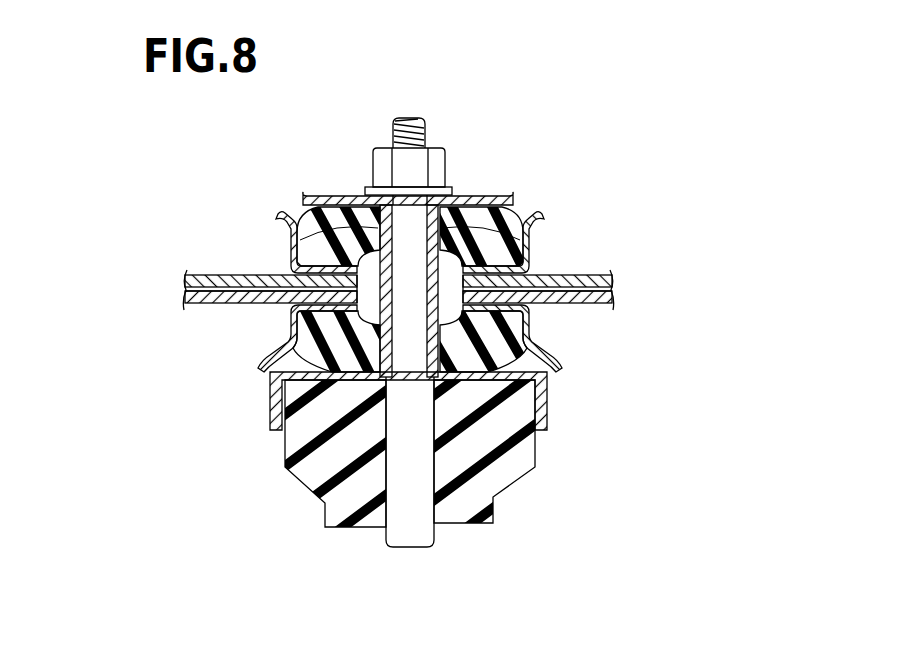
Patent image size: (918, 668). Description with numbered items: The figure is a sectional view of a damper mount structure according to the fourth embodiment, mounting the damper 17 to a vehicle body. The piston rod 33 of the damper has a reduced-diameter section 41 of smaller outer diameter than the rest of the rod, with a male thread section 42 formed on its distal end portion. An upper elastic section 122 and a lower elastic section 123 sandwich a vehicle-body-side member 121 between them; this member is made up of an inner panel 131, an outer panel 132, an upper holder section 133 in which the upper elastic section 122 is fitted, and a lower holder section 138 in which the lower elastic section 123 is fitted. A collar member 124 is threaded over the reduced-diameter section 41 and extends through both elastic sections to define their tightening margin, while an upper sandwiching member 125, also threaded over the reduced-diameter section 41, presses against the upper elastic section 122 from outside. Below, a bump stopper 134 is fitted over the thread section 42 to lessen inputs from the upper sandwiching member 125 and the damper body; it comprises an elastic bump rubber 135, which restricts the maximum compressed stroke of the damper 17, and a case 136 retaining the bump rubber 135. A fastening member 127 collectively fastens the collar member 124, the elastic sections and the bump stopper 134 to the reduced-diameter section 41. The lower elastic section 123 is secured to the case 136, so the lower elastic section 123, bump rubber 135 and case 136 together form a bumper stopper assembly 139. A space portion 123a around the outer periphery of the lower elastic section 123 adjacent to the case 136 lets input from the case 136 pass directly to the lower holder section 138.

The damper 17 is at (465, 542).
The piston rod 33 is at (437, 468).
The reduced-diameter section 41 is at (398, 197).
The male thread section 42 is at (400, 125).
The vehicle-body-side member 121 is at (498, 301).
The upper elastic section 122 is at (517, 202).
The lower elastic section 123 is at (387, 349).
The space portion 123a is at (548, 346).
The collar member 124 is at (292, 247).
The upper sandwiching member 125 is at (508, 215).
The fastening member 127 is at (433, 160).
The inner panel 131 is at (613, 298).
The outer panel 132 is at (613, 278).
The upper holder section 133 is at (526, 238).
The bump stopper 134 is at (322, 445).
The bump rubber 135 is at (290, 447).
The case 136 is at (270, 400).
The lower holder section 138 is at (530, 327).
The bumper stopper assembly 139 is at (352, 437).